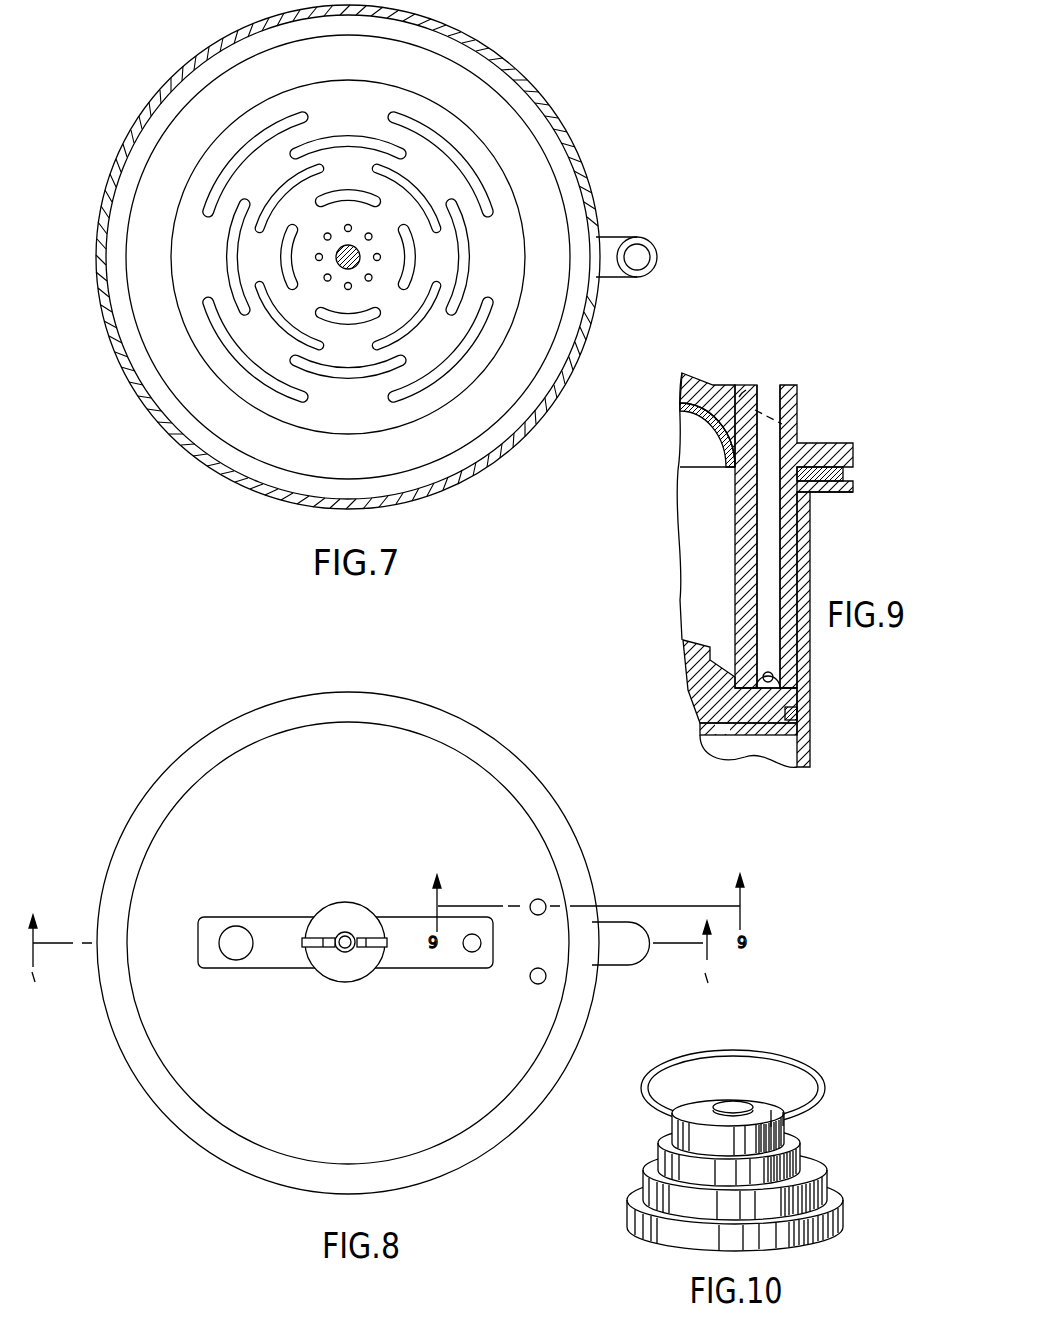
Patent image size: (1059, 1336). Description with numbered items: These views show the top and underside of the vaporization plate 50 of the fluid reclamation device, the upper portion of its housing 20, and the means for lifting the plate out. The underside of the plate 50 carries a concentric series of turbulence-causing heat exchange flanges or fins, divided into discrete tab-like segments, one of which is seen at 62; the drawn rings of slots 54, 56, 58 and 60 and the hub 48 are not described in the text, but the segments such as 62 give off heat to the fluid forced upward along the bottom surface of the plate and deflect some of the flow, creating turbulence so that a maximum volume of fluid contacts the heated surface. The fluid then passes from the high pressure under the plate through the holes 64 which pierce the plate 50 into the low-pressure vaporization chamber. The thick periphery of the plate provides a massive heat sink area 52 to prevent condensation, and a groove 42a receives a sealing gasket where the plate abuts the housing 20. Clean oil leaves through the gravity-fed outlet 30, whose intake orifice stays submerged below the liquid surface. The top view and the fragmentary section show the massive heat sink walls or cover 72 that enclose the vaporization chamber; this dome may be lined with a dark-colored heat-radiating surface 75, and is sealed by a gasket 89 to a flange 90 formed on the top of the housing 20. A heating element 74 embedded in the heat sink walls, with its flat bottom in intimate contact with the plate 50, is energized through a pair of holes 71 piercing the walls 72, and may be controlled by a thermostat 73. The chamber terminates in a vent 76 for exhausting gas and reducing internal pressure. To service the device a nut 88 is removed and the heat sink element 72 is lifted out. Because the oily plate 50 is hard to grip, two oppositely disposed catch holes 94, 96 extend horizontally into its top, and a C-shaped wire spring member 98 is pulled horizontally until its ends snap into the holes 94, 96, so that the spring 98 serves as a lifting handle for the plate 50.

In FIG. 7, the housing 20 is at (563, 125).
In FIG. 8, the housing 20 is at (552, 802).
In FIG. 9, the housing 20 is at (812, 557).
In FIG. 7, the gravity-fed outlet 30 is at (617, 234).
In FIG. 8, the gravity-fed outlet 30 is at (639, 921).
In FIG. 7, the groove 42a is at (512, 418).
In FIG. 7, the central hub 48 is at (337, 252).
In FIG. 10, the vaporization plate 50 is at (743, 1128).
In FIG. 7, the heat sink area 52 is at (472, 463).
In FIG. 7, the inner arcuate slots 54 is at (417, 272).
In FIG. 7, the second ring of arcuate slots 56 is at (400, 338).
In FIG. 7, the third ring of arcuate slots 58 is at (466, 279).
In FIG. 7, the outer arcuate slots 60 is at (493, 200).
In FIG. 7, the segment 62 is at (467, 370).
In FIG. 7, the holes 64 is at (368, 234).
In FIG. 8, the holes 71 is at (548, 903).
In FIG. 9, the holes 71 is at (768, 443).
In FIG. 9, the heat sink walls or cover 72 is at (742, 393).
In FIG. 8, the thermostat 73 is at (472, 952).
In FIG. 9, the heating element 74 is at (775, 677).
In FIG. 9, the dark-colored surface 75 is at (712, 385).
In FIG. 8, the vent 76 is at (232, 930).
In FIG. 8, the nut 88 is at (325, 918).
In FIG. 9, the gasket 89 is at (853, 475).
In FIG. 9, the flange 90 is at (832, 492).
In FIG. 10, the hole 94 is at (660, 1160).
In FIG. 10, the hole 96 is at (771, 1108).
In FIG. 10, the C-shaped wire spring member 98 is at (765, 1050).